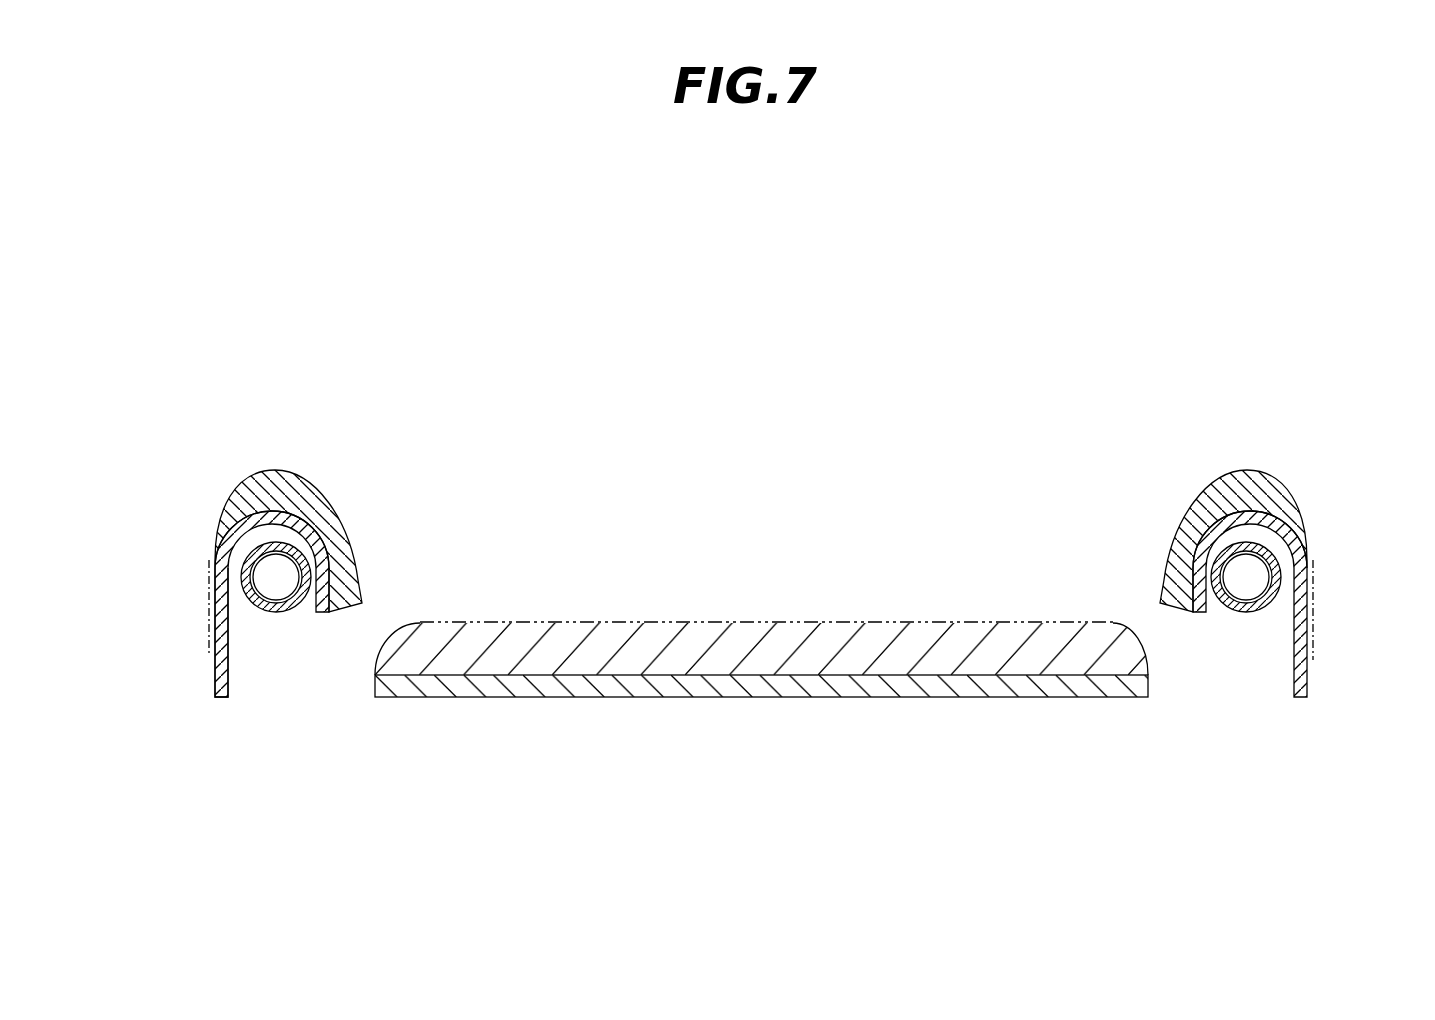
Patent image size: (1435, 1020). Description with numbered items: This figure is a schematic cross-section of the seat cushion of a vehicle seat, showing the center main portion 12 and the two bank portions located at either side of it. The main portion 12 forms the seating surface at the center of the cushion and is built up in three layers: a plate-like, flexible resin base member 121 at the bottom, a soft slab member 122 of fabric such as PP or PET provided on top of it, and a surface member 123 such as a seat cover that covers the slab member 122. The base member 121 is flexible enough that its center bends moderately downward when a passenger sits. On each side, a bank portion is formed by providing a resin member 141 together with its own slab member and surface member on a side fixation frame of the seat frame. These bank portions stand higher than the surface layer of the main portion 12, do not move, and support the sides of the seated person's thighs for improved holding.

The main portion 12 is at (797, 374).
The base member 121 is at (751, 684).
The slab member 122 is at (772, 652).
The surface member 123 is at (598, 622).
The resin member 141 is at (212, 648).